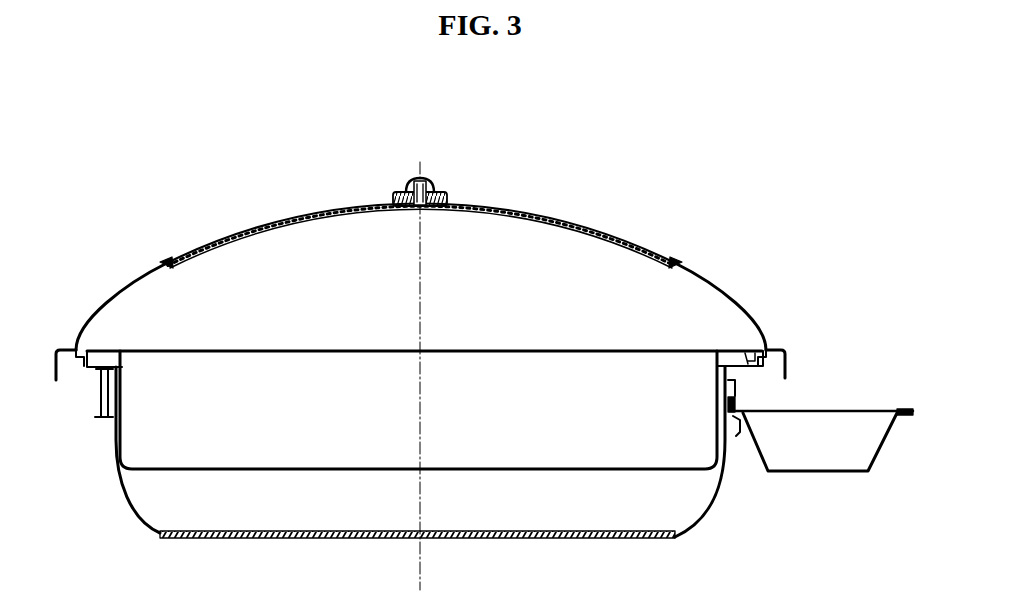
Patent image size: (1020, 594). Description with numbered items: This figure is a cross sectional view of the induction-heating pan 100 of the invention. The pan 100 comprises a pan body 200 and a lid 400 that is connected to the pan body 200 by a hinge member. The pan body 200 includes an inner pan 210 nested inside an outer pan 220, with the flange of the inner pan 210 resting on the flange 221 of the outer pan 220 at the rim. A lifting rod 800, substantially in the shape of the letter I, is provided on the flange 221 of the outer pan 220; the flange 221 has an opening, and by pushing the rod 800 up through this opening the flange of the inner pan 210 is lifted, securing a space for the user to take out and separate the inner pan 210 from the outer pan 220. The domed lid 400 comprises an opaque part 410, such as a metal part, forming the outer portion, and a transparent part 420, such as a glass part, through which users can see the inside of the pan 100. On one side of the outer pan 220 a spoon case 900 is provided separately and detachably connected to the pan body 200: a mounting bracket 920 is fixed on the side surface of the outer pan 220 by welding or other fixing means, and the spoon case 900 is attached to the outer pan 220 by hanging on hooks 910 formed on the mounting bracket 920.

The induction-heating pan 100 is at (651, 213).
The pan body 200 is at (123, 503).
The inner pan 210 is at (556, 456).
The outer pan 220 is at (700, 518).
The flange of the outer pan 221 is at (85, 372).
The lid 400 is at (250, 218).
The opaque part 410 is at (723, 293).
The transparent part 420 is at (550, 218).
The lifting rod 800 is at (95, 418).
The spoon case 900 is at (828, 472).
The hooks 910 is at (735, 430).
The mounting bracket 920 is at (735, 392).